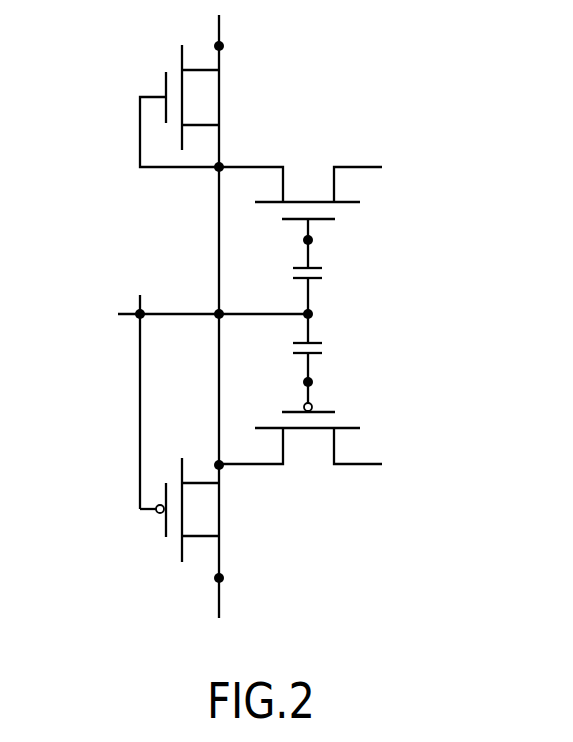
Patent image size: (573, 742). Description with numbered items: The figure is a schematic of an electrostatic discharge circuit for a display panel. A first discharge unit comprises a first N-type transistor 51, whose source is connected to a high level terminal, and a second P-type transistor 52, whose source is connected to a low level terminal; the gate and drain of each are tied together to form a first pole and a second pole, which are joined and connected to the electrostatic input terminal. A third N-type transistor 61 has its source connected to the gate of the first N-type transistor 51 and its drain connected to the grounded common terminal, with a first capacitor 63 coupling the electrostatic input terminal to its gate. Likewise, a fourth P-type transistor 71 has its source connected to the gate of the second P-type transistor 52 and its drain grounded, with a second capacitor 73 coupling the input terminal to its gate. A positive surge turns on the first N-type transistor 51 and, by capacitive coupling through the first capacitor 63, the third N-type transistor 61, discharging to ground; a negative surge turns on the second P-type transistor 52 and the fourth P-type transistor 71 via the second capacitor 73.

The first N-type transistor 51 is at (171, 118).
The second P-type transistor 52 is at (175, 525).
The third N-type transistor 61 is at (317, 182).
The first capacitor 63 is at (328, 273).
The fourth P-type transistor 71 is at (312, 460).
The second capacitor 73 is at (328, 349).